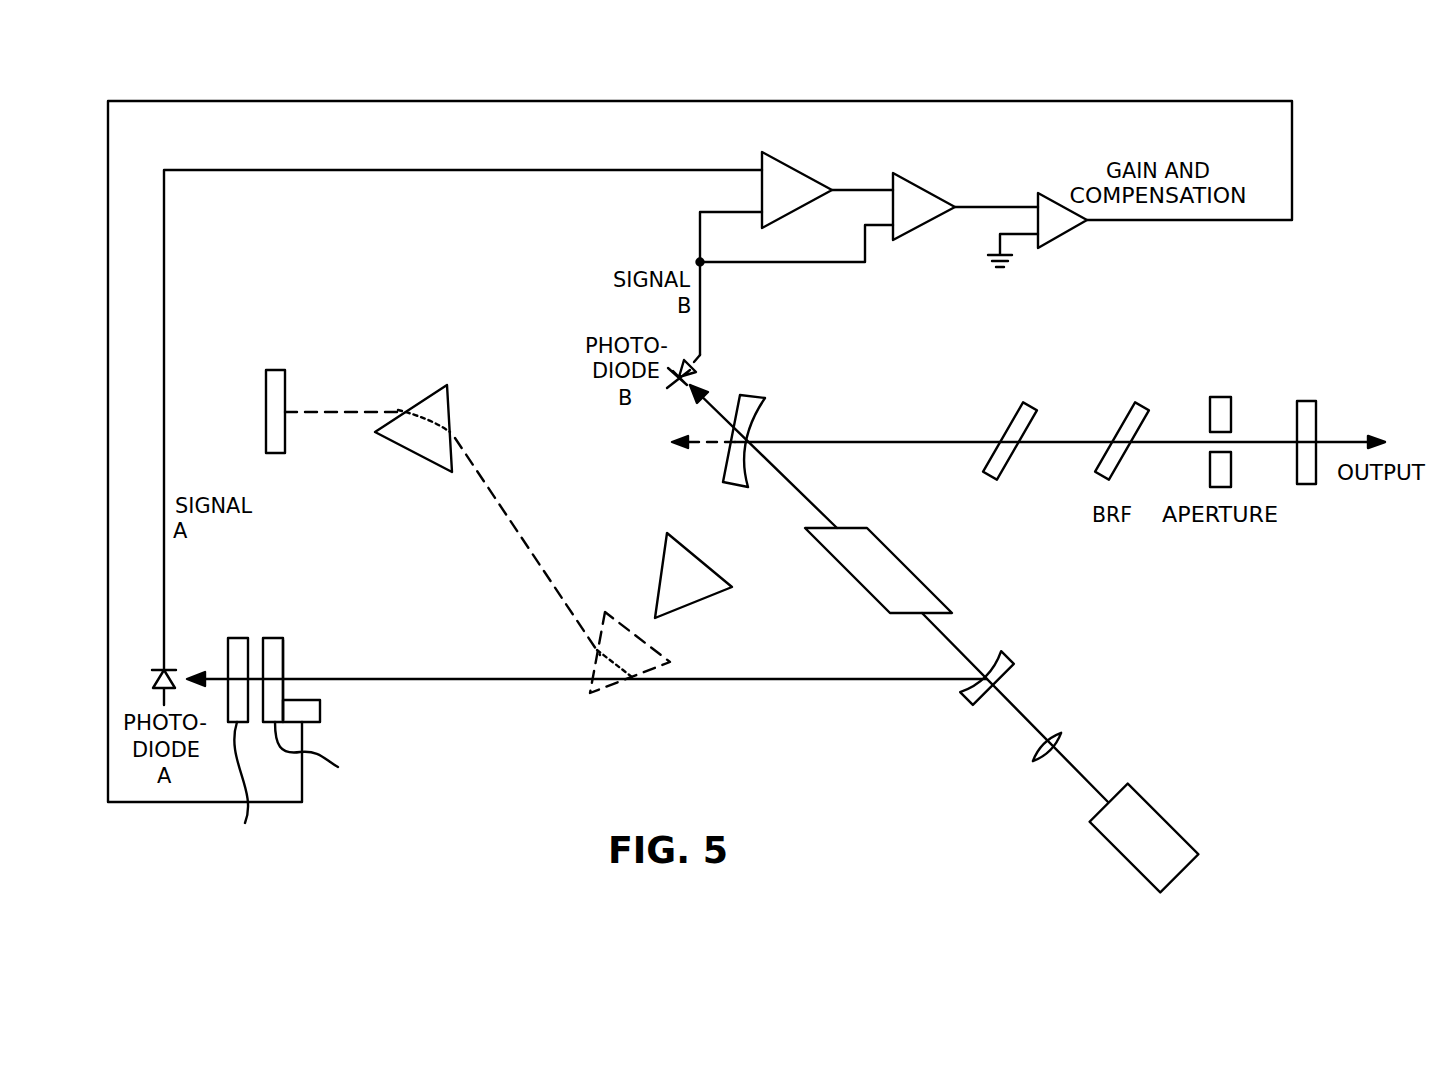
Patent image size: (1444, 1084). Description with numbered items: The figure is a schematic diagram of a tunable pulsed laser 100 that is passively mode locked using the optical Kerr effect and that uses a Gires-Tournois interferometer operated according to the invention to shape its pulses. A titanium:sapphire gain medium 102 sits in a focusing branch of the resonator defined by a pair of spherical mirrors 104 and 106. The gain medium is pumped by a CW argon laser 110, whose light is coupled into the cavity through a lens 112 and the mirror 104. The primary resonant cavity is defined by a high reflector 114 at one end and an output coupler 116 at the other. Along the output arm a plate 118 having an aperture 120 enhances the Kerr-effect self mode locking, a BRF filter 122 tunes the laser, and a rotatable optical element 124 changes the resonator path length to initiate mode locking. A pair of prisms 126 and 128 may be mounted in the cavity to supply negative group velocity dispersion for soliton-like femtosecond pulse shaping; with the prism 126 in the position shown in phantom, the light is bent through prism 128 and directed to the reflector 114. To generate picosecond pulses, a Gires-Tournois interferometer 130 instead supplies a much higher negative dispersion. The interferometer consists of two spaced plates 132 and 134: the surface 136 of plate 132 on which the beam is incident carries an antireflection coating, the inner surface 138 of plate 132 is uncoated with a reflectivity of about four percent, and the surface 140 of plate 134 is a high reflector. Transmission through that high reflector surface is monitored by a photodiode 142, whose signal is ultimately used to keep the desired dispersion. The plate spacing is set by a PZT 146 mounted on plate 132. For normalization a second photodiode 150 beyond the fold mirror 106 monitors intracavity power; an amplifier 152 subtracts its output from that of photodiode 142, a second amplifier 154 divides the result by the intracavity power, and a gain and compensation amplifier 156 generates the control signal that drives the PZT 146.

The tunable pulsed laser 100 is at (1265, 263).
The gain medium 102 is at (883, 543).
The spherical mirror 104 is at (1002, 657).
The spherical mirror 106 is at (755, 398).
The CW argon laser 110 is at (1155, 810).
The lens 112 is at (1062, 733).
The high reflector 114 is at (276, 369).
The output coupler 116 is at (1305, 400).
The plate 118 is at (1218, 397).
The aperture 120 is at (1210, 432).
The BRF filter 122 is at (1012, 415).
The optical element 124 is at (1122, 423).
The prism 126 is at (682, 607).
The prism 128 is at (425, 392).
The Gires-Tournois interferometer 130 is at (273, 637).
The plate 132 is at (330, 752).
The plate 134 is at (246, 789).
The surface 136 is at (287, 657).
The inner surface 138 is at (258, 637).
The surface 140 is at (253, 637).
The photodiode 142 is at (153, 673).
The PZT 146 is at (323, 710).
The photodiode 150 is at (690, 370).
The amplifier 152 is at (790, 167).
The second amplifier 154 is at (920, 182).
The gain and compensation amplifier 156 is at (1058, 240).